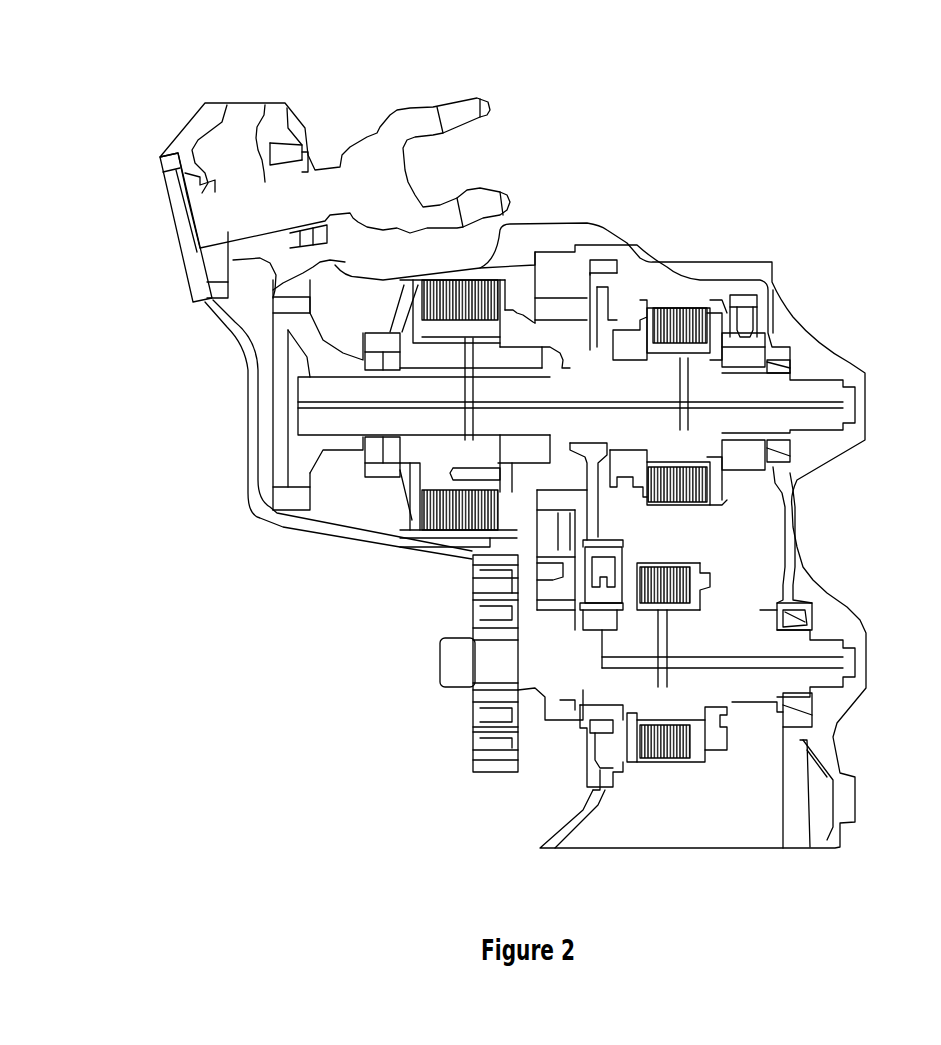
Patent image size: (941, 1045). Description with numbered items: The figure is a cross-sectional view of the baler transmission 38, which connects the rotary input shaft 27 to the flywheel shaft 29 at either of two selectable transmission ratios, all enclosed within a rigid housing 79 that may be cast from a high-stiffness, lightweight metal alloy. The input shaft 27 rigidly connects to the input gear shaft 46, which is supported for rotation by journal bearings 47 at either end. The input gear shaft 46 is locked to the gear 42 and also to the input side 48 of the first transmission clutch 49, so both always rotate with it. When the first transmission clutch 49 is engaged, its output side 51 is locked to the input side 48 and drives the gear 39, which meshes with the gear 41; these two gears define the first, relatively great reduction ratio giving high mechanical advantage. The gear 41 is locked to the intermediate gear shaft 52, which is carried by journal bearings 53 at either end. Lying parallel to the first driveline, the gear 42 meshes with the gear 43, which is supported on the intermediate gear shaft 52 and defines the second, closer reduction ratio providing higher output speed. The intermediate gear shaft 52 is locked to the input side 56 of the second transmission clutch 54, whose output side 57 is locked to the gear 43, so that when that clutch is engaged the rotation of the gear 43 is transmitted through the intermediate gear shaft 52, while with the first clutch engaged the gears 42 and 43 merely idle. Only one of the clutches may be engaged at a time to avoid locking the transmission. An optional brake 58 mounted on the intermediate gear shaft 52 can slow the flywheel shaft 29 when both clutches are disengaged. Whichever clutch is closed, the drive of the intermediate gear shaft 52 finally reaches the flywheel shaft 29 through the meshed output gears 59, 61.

The rotary input shaft 27 is at (445, 660).
The flywheel shaft 29 is at (320, 175).
The transmission 38 is at (347, 540).
The gear 39 is at (593, 768).
The gear 41 is at (603, 270).
The gear 42 is at (740, 567).
The gear 43 is at (752, 295).
The input gear shaft 46 is at (813, 633).
The journal bearings 47 is at (487, 740).
The input side of first transmission clutch 48 is at (665, 760).
The first transmission clutch 49 is at (633, 745).
The output side of first transmission clutch 51 is at (618, 752).
The intermediate gear shaft 52 is at (305, 392).
The journal bearings 53 is at (390, 453).
The second transmission clutch 54 is at (685, 315).
The input side of second transmission clutch 56 is at (675, 308).
The output side of second transmission clutch 57 is at (715, 315).
The brake 58 is at (490, 280).
The output gear 59 is at (282, 488).
The output gear 61 is at (270, 288).
The rigid housing 79 is at (240, 330).